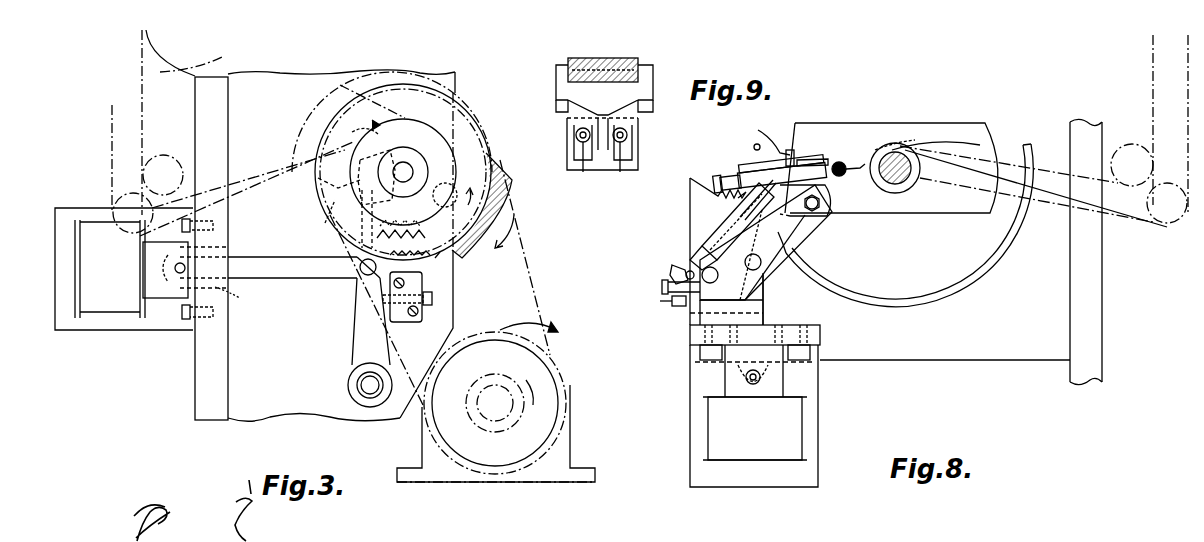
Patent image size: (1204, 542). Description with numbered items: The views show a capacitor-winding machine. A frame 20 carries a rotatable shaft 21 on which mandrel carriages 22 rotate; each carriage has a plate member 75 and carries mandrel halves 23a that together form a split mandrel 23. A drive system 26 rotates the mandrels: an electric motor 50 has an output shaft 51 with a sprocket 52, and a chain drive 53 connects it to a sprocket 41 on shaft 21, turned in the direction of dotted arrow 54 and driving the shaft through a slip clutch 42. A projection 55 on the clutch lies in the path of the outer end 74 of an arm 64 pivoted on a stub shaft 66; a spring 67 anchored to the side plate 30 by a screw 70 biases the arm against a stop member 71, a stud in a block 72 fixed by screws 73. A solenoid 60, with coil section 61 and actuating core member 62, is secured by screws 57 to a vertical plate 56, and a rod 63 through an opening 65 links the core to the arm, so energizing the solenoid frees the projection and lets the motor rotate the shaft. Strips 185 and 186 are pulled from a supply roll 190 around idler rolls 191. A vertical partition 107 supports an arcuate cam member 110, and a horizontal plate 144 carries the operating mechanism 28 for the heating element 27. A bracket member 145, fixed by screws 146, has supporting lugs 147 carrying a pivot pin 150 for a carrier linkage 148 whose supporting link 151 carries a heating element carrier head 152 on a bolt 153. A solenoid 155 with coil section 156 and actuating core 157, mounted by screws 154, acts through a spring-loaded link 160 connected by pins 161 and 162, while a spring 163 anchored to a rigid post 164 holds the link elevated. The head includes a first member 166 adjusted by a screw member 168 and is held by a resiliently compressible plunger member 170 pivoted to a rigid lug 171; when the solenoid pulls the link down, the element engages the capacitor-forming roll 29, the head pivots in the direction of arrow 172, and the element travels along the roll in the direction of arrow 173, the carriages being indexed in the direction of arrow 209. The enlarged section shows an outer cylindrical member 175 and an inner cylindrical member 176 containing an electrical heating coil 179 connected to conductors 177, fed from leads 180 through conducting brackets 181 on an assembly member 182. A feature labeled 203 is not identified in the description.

In FIG. 3, the frame 20 is at (268, 422).
In FIG. 8, the frame 20 is at (1056, 364).
In FIG. 3, the rotatable shaft 21 is at (405, 163).
In FIG. 8, the rotatable shaft 21 is at (895, 195).
In FIG. 3, the mandrel carriage 22 is at (518, 187).
In FIG. 8, the mandrel carriage 22 is at (978, 120).
In FIG. 3, the split mandrel 23 is at (412, 163).
In FIG. 8, the split mandrel 23 is at (846, 174).
In FIG. 8, the mandrel half 23a is at (946, 170).
In FIG. 3, the drive system 26 is at (557, 340).
In FIG. 9, the heating element 27 is at (656, 86).
In FIG. 8, the heating element 27 is at (842, 152).
In FIG. 8, the heating element operating mechanism 28 is at (688, 327).
In FIG. 8, the capacitor-forming roll 29 is at (848, 160).
In FIG. 3, the side plate 30 is at (348, 412).
In FIG. 3, the sprocket 41 is at (478, 137).
In FIG. 3, the slip clutch 42 is at (452, 165).
In FIG. 3, the electric motor 50 is at (572, 434).
In FIG. 3, the output shaft 51 is at (508, 412).
In FIG. 3, the sprocket 52 is at (528, 452).
In FIG. 3, the chain drive 53 is at (540, 306).
In FIG. 3, the dotted arrow 54 is at (460, 212).
In FIG. 3, the projection 55 is at (372, 168).
In FIG. 3, the vertical plate 56 is at (198, 386).
In FIG. 3, the screws 57 is at (183, 226).
In FIG. 3, the solenoid 60 is at (140, 332).
In FIG. 3, the coil section 61 is at (110, 269).
In FIG. 3, the actuating core member 62 is at (166, 298).
In FIG. 3, the rod 63 is at (300, 262).
In FIG. 3, the arm 64 is at (355, 325).
In FIG. 3, the opening 65 is at (236, 296).
In FIG. 3, the stub shaft 66 is at (357, 382).
In FIG. 3, the spring 67 is at (437, 262).
In FIG. 8, the spring 67 is at (762, 146).
In FIG. 3, the screw 70 is at (456, 268).
In FIG. 3, the stop member 71 is at (383, 299).
In FIG. 3, the block 72 is at (420, 284).
In FIG. 3, the screws 73 is at (398, 280).
In FIG. 3, the outer end 74 is at (339, 178).
In FIG. 8, the plate member 75 is at (982, 213).
In FIG. 8, the vertical partition 107 is at (952, 356).
In FIG. 8, the cam member 110 is at (975, 275).
In FIG. 8, the horizontal plate 144 is at (788, 316).
In FIG. 8, the bracket member 145 is at (765, 302).
In FIG. 8, the screws 146 is at (690, 313).
In FIG. 8, the supporting lugs 147 is at (765, 282).
In FIG. 8, the carrier linkage 148 is at (805, 262).
In FIG. 8, the pivot pin 150 is at (678, 265).
In FIG. 8, the supporting link 151 is at (786, 256).
In FIG. 8, the heating element carrier head 152 is at (755, 148).
In FIG. 8, the bolt 153 is at (822, 217).
In FIG. 8, the screws 154 is at (700, 358).
In FIG. 8, the solenoid 155 is at (778, 416).
In FIG. 8, the coil section 156 is at (805, 412).
In FIG. 8, the actuating core 157 is at (780, 386).
In FIG. 8, the link 160 is at (768, 308).
In FIG. 8, the pin 161 is at (745, 377).
In FIG. 8, the pin 162 is at (760, 255).
In FIG. 8, the spring 163 is at (730, 202).
In FIG. 8, the rigid post 164 is at (689, 212).
In FIG. 8, the first member 166 is at (825, 186).
In FIG. 8, the screw member 168 is at (746, 166).
In FIG. 8, the resiliently compressible plunger member 170 is at (704, 237).
In FIG. 8, the rigid lug 171 is at (668, 286).
In FIG. 8, the arrow 172 is at (765, 200).
In FIG. 8, the arrow 173 is at (845, 132).
In FIG. 9, the outer cylindrical member 175 is at (632, 56).
In FIG. 9, the inner cylindrical member 176 is at (618, 58).
In FIG. 9, the conductors 177 is at (565, 66).
In FIG. 9, the electrical heating coil 179 is at (603, 100).
In FIG. 9, the leads 180 is at (584, 175).
In FIG. 9, the conducting brackets 181 is at (565, 118).
In FIG. 9, the assembly member 182 is at (640, 160).
In FIG. 3, the strip 185 is at (266, 168).
In FIG. 8, the strip 185 is at (1050, 168).
In FIG. 3, the strip 186 is at (262, 182).
In FIG. 8, the strip 186 is at (1052, 200).
In FIG. 3, the supply roll 190 is at (190, 77).
In FIG. 3, the idler rolls 191 is at (170, 156).
In FIG. 8, the idler rolls 191 is at (1146, 200).
In FIG. 8, the line 203 is at (906, 139).
In FIG. 8, the arrow 209 is at (980, 142).